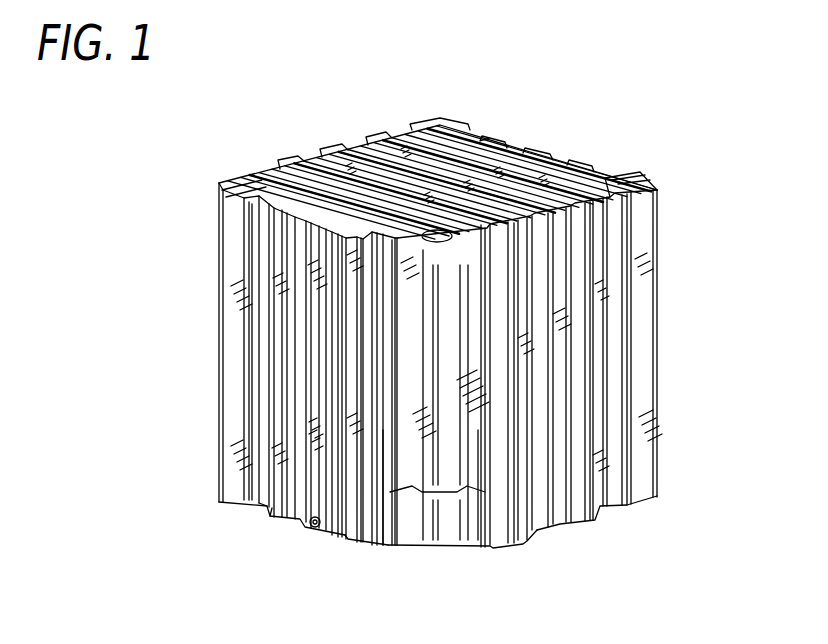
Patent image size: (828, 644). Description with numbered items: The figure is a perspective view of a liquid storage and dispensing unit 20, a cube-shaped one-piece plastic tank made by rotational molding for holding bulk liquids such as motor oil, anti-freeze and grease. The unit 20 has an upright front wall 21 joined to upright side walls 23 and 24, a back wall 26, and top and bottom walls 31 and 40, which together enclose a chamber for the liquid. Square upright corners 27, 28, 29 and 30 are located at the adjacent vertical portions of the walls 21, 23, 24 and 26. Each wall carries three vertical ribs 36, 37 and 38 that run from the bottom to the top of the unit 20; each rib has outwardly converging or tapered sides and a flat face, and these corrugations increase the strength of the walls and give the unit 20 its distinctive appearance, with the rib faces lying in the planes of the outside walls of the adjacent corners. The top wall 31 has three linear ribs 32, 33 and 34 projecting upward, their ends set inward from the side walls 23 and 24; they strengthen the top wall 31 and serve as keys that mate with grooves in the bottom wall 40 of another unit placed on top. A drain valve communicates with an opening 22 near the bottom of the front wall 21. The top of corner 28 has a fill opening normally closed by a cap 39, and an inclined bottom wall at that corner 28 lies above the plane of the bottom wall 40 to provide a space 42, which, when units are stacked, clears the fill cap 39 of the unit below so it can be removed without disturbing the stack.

The liquid storage and dispensing unit 20 is at (641, 137).
The front wall 21 is at (262, 318).
The opening 22 is at (307, 530).
The side wall 23 is at (283, 166).
The side wall 24 is at (557, 515).
The back wall 26 is at (553, 153).
The upright corner 27 is at (222, 218).
The upright corner 28 is at (413, 460).
The upright corner 29 is at (643, 297).
The upright corner 30 is at (437, 132).
The top wall 31 is at (473, 140).
The linear rib 32 is at (307, 164).
The linear rib 33 is at (350, 157).
The linear rib 34 is at (398, 143).
The vertical rib 36 is at (277, 498).
The vertical rib 37 is at (315, 528).
The vertical rib 38 is at (327, 529).
The cap 39 is at (440, 244).
The bottom wall 40 is at (493, 546).
The space 42 is at (425, 520).